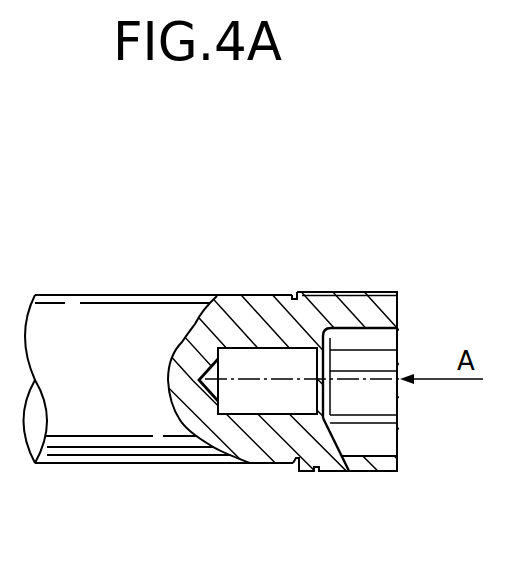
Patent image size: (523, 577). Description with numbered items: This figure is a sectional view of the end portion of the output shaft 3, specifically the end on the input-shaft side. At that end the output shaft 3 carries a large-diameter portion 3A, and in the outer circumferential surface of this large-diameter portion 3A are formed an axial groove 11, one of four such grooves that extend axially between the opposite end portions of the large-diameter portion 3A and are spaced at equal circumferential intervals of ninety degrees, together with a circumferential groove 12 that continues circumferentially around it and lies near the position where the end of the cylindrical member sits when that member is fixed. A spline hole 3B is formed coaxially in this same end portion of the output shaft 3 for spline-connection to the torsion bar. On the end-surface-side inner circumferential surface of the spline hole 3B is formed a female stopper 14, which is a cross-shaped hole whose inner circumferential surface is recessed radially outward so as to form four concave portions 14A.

The output shaft 3 is at (104, 448).
The large-diameter portion 3A is at (397, 300).
The spline hole 3B is at (238, 414).
The axial groove 11 is at (376, 298).
The circumferential groove 12 is at (318, 294).
The female stopper 14 is at (362, 335).
The concave portion 14A is at (387, 455).